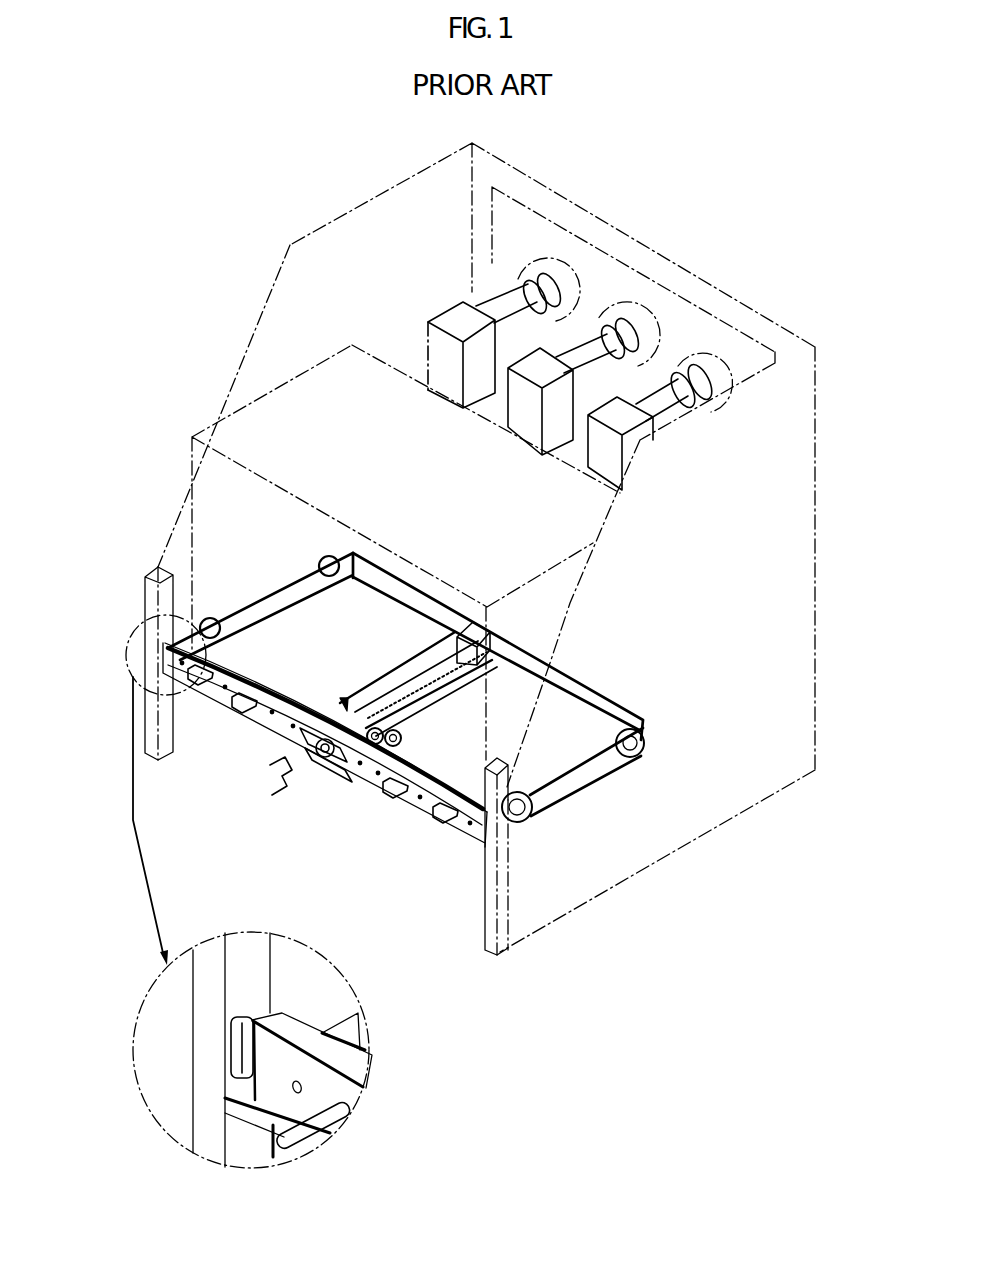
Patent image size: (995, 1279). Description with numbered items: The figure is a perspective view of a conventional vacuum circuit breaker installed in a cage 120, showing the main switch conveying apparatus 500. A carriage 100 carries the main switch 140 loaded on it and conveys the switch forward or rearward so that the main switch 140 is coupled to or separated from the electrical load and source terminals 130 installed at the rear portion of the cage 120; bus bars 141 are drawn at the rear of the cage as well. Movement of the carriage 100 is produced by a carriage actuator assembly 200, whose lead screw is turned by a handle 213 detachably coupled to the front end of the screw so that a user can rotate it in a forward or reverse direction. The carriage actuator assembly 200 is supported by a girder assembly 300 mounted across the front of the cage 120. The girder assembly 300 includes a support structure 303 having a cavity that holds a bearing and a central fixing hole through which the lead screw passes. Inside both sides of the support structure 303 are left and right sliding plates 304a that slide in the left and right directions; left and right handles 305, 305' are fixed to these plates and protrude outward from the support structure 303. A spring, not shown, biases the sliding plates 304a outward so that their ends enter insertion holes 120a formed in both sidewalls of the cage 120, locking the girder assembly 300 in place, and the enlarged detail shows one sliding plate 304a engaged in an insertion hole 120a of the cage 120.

The carriage 100 is at (236, 585).
The cage 120 is at (790, 648).
The insertion holes 120a is at (243, 1074).
The electrical load and source terminals 130 is at (625, 282).
The main switch 140 is at (330, 415).
The bus bars 141 is at (483, 307).
The carriage actuator assembly 200 is at (249, 788).
The handle 213 is at (290, 797).
The girder assembly 300 is at (471, 870).
The support structure 303 is at (372, 782).
The sliding plates 304a is at (273, 1140).
The left handle 305 is at (203, 734).
The right handle 305' is at (420, 836).
The conveying apparatus 500 is at (331, 807).